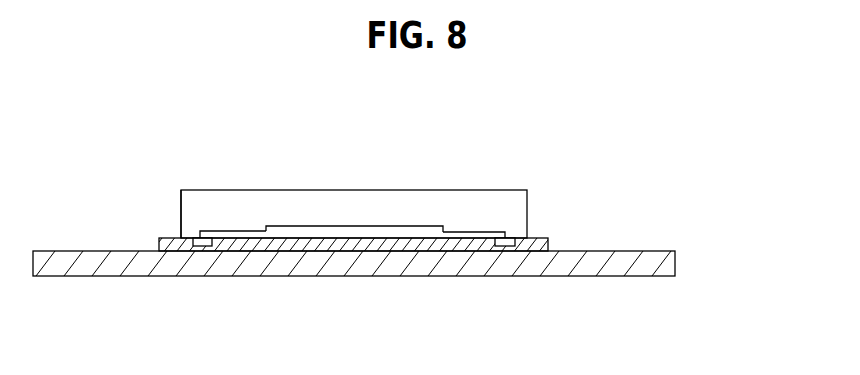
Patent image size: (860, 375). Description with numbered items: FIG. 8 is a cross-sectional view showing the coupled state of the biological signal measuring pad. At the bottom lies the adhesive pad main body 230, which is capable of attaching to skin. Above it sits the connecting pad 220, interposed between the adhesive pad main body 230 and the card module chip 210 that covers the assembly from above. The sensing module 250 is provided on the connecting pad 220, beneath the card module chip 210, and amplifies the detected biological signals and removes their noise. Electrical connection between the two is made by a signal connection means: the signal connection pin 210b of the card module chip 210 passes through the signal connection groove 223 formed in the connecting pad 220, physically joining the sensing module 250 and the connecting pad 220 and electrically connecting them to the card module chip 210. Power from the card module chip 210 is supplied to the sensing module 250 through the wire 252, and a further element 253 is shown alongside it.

The housing / package body 210 is at (527, 199).
The housing side wall / bottom edge 210b is at (198, 237).
The substrate layer 220 is at (548, 246).
The recess / pad region in substrate 223 is at (199, 244).
The circuit board 230 is at (675, 266).
The semiconductor chip 250 is at (355, 232).
The first electrode pad 252 is at (236, 231).
The second electrode pad 253 is at (482, 232).